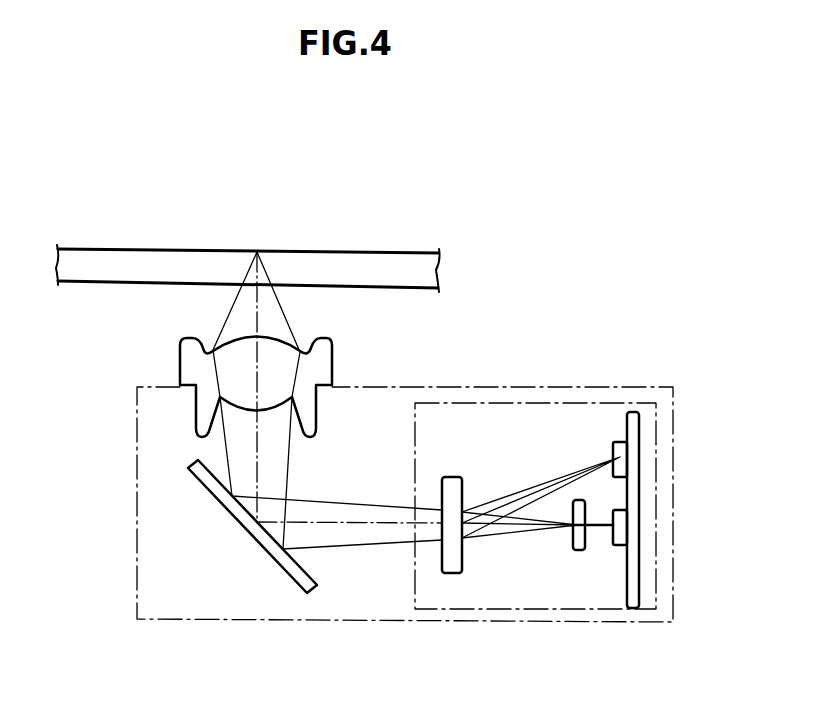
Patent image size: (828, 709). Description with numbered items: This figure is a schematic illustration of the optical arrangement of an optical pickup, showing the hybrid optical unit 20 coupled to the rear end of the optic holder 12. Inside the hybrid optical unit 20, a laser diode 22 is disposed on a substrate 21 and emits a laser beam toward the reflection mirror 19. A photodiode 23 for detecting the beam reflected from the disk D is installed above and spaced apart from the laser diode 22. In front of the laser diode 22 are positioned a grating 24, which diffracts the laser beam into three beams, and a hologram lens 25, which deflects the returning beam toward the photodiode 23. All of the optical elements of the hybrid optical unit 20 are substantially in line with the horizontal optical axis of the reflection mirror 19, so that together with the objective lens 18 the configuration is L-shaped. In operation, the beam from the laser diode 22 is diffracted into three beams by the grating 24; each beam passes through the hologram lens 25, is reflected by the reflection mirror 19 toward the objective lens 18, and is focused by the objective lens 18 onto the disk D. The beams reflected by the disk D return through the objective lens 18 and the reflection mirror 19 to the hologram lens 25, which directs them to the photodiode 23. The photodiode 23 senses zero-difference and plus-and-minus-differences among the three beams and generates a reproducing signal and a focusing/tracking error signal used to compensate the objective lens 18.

The disk D is at (352, 253).
The optic holder 12 is at (137, 455).
The objective lens 18 is at (330, 360).
The reflection mirror 19 is at (300, 580).
The hybrid optical unit 20 is at (414, 445).
The substrate 21 is at (633, 582).
The laser diode 22 is at (620, 523).
The photodiode 23 is at (620, 456).
The grating 24 is at (577, 548).
The hologram lens 25 is at (450, 567).